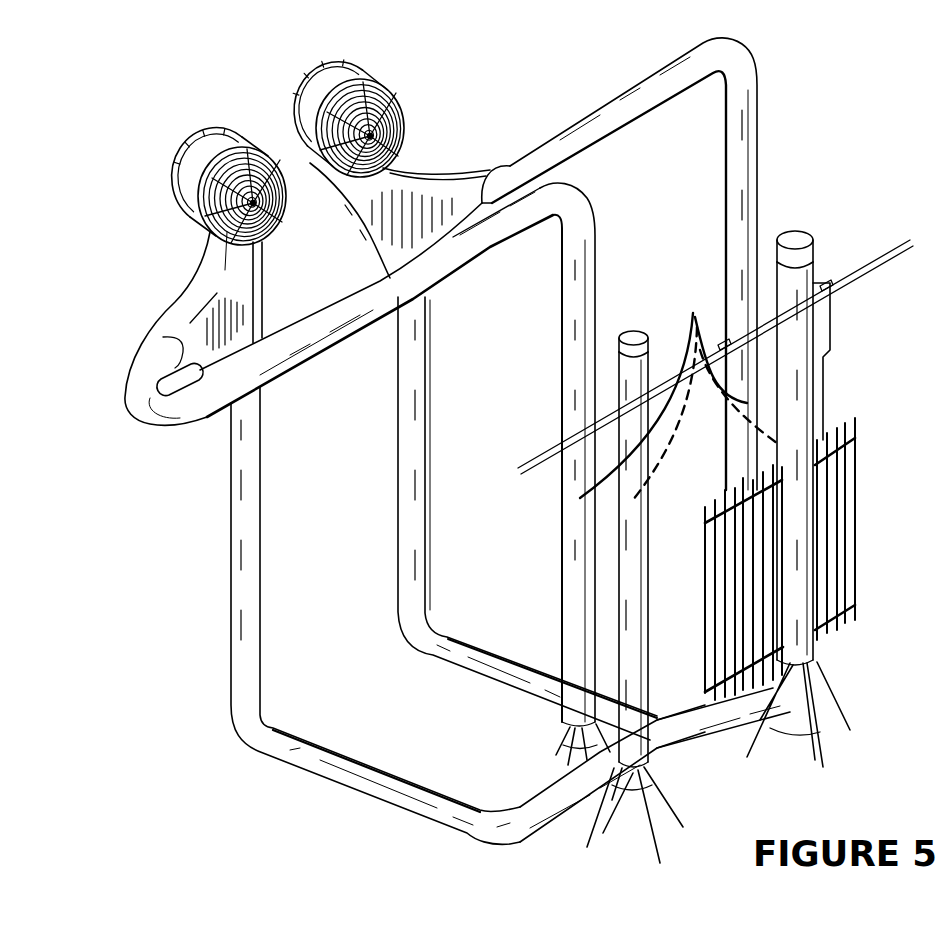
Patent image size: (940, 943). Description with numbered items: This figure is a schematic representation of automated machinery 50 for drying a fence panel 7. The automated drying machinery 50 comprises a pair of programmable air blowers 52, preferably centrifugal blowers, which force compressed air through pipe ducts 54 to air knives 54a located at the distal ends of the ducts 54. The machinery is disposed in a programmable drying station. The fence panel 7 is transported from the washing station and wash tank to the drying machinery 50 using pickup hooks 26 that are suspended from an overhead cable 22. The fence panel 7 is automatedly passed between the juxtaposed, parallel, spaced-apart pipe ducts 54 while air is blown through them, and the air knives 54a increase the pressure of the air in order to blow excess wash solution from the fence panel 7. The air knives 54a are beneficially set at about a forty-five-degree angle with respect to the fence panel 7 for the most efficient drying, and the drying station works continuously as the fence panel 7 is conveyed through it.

The fence panel 7 is at (897, 468).
The overhead cable 22 is at (850, 275).
The pickup hooks 26 is at (825, 375).
The automated machinery 50 is at (858, 232).
The programmable air blowers 52 is at (302, 137).
The pipe ducts 54 is at (632, 588).
The air knives 54a is at (678, 392).